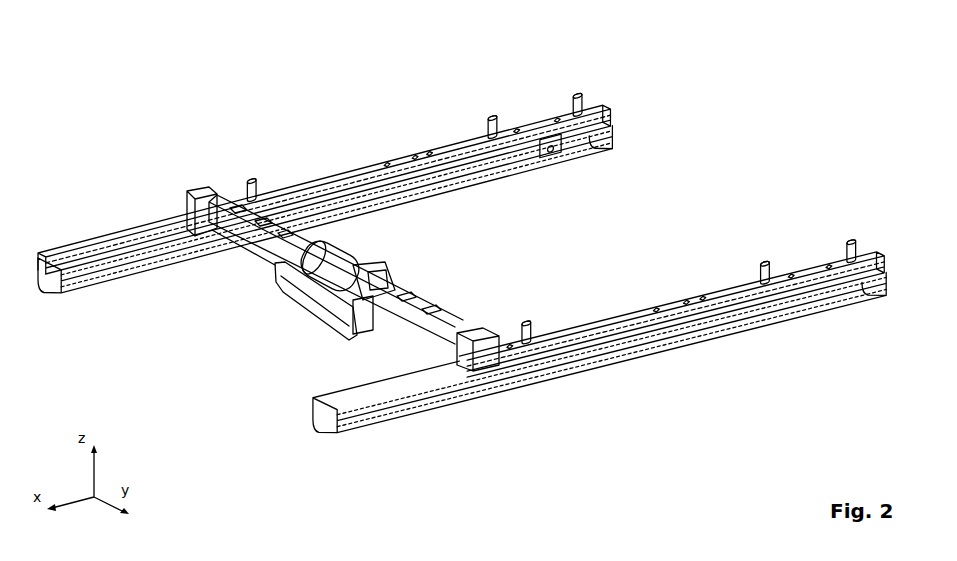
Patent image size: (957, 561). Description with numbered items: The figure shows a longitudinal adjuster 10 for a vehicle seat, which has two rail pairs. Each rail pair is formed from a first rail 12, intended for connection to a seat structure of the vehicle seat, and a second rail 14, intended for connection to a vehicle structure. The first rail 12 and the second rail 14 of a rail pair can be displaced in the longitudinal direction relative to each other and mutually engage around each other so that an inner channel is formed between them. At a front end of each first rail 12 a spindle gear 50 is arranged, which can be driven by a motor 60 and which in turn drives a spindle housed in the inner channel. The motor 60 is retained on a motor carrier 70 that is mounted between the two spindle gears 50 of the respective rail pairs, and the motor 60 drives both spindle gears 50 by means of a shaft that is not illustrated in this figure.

The longitudinal adjuster 10 is at (248, 119).
The first rail 12 is at (452, 144).
The second rail 14 is at (470, 171).
The spindle gear 50 is at (495, 365).
The motor 60 is at (347, 270).
The motor carrier 70 is at (347, 338).